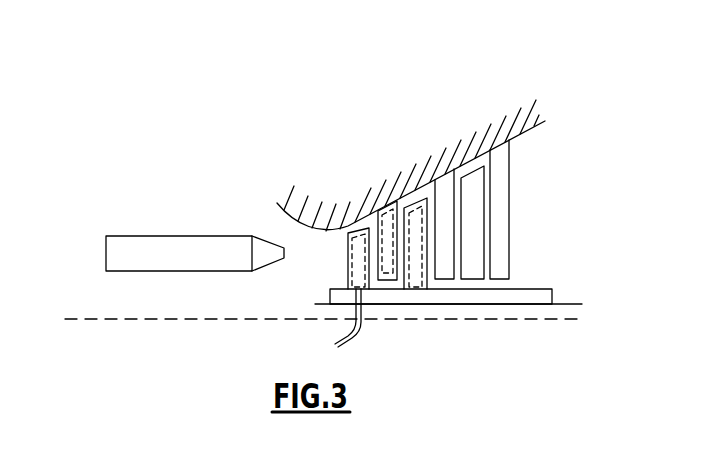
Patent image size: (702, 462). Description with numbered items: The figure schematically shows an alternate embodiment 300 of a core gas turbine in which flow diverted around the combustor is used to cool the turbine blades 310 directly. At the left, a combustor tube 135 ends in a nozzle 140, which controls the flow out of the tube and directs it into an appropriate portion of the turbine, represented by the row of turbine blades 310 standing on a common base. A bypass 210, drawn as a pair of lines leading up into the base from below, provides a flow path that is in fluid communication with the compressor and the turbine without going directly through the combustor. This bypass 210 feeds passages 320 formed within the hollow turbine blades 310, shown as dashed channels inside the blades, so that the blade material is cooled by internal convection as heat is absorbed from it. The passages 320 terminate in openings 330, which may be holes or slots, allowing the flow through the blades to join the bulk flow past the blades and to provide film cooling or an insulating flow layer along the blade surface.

The alternate embodiment 300 is at (218, 144).
The turbine blades 310 is at (437, 186).
The passages 320 is at (379, 211).
The openings 330 is at (352, 240).
The combustor tube 135 is at (148, 247).
The nozzle 140 is at (271, 256).
The bypass 210 is at (361, 322).